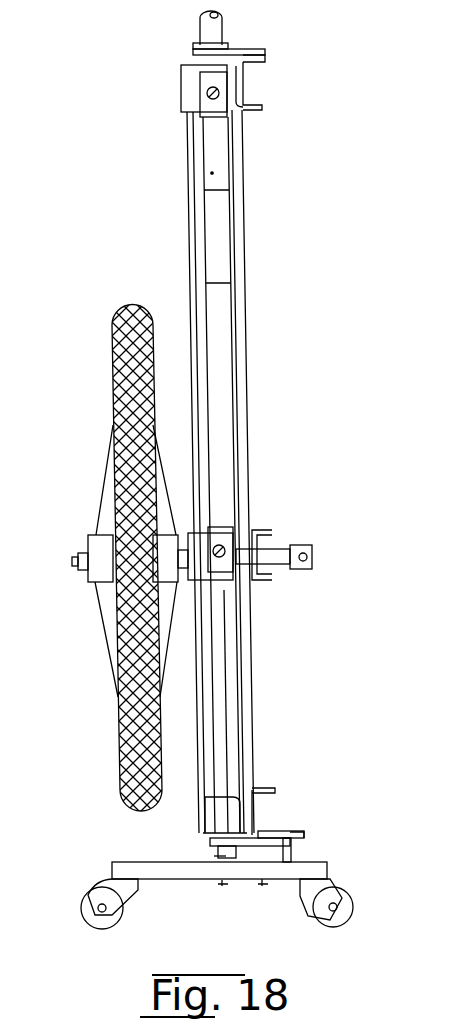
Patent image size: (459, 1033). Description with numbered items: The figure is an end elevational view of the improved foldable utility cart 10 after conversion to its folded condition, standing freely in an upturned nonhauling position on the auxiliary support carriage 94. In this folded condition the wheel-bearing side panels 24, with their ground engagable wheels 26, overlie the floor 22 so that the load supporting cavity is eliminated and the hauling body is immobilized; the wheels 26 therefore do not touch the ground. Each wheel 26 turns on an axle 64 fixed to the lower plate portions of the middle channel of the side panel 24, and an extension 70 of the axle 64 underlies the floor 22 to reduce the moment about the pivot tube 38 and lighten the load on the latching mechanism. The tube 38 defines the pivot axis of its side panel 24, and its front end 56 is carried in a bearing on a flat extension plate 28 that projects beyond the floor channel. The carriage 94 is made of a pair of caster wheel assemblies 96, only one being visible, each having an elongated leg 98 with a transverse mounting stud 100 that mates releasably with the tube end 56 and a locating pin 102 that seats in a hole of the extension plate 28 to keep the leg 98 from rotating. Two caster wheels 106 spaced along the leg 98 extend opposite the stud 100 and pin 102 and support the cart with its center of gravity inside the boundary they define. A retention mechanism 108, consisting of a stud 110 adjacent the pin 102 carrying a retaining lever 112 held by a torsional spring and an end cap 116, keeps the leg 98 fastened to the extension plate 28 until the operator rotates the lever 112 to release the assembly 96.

The stand apparatus 10 is at (320, 104).
The floor 22 is at (245, 336).
The wheel-bearing side panel 24 is at (198, 770).
The ground engagable wheel 26 is at (117, 400).
The extension plate 28 is at (207, 849).
The tube 38 is at (226, 698).
The front end of tube 56 is at (218, 852).
The axle 64 is at (80, 572).
The extension of wheel axle 70 is at (290, 546).
The auxiliary support carriage 94 is at (90, 946).
The caster wheel assembly 96 is at (340, 865).
The leg 98 is at (112, 866).
The mounting stud 100 is at (226, 880).
The locating pin 102 is at (266, 850).
The caster wheel 106 is at (110, 918).
The retention mechanism 108 is at (304, 816).
The stud 110 is at (292, 848).
The retaining lever 112 is at (305, 832).
The end cap 116 is at (287, 830).